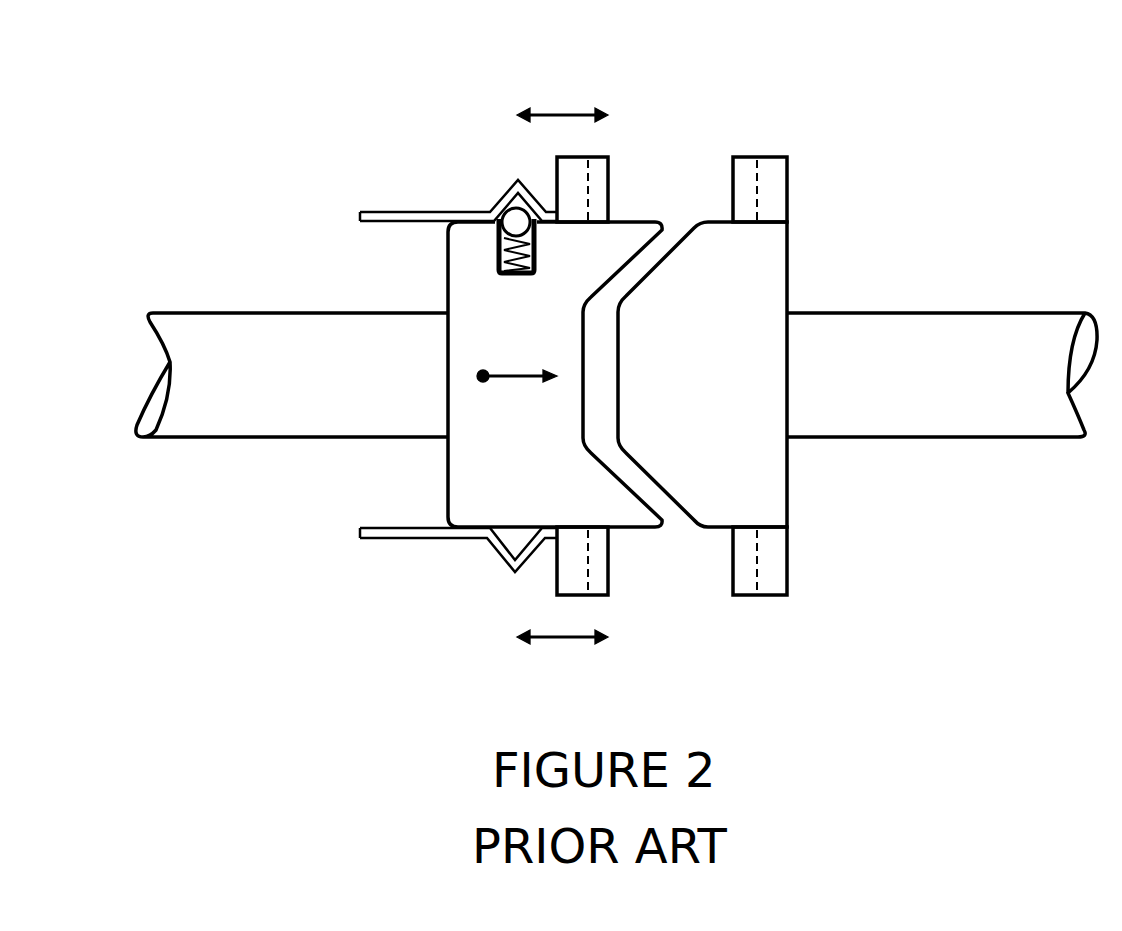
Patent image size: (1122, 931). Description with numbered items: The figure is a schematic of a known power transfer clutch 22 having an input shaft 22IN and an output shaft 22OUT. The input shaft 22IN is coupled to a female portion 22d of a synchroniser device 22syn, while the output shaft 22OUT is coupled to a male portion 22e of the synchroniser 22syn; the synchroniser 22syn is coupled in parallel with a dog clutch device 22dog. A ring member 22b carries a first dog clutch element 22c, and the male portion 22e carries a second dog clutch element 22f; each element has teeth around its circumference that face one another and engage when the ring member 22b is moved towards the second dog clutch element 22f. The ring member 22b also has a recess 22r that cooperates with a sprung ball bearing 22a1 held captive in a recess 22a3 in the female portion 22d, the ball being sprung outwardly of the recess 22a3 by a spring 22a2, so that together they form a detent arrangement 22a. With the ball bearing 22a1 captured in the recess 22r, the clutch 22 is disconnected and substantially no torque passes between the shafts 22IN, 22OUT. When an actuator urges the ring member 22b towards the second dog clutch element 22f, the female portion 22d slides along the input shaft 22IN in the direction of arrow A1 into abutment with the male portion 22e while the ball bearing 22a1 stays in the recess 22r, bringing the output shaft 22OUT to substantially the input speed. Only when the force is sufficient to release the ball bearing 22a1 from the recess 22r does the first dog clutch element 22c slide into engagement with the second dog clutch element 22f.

The power transfer clutch 22 is at (625, 346).
The detent mechanism 22a is at (389, 175).
The sprung ball bearing 22a1 is at (503, 213).
The detent spring 22a2 is at (505, 253).
The recess 22a3 is at (417, 258).
The ring member 22b is at (376, 212).
The first dog clutch element 22c is at (603, 157).
The female portion 22d is at (538, 474).
The male portion 22e is at (723, 389).
The second dog clutch element 22f is at (772, 157).
The recess 22r is at (515, 221).
The input shaft 22IN is at (212, 418).
The output shaft 22OUT is at (1008, 418).
The dog clutch device 22dog is at (490, 594).
The synchroniser device 22syn is at (655, 562).
The axial direction arrow A1 is at (512, 375).